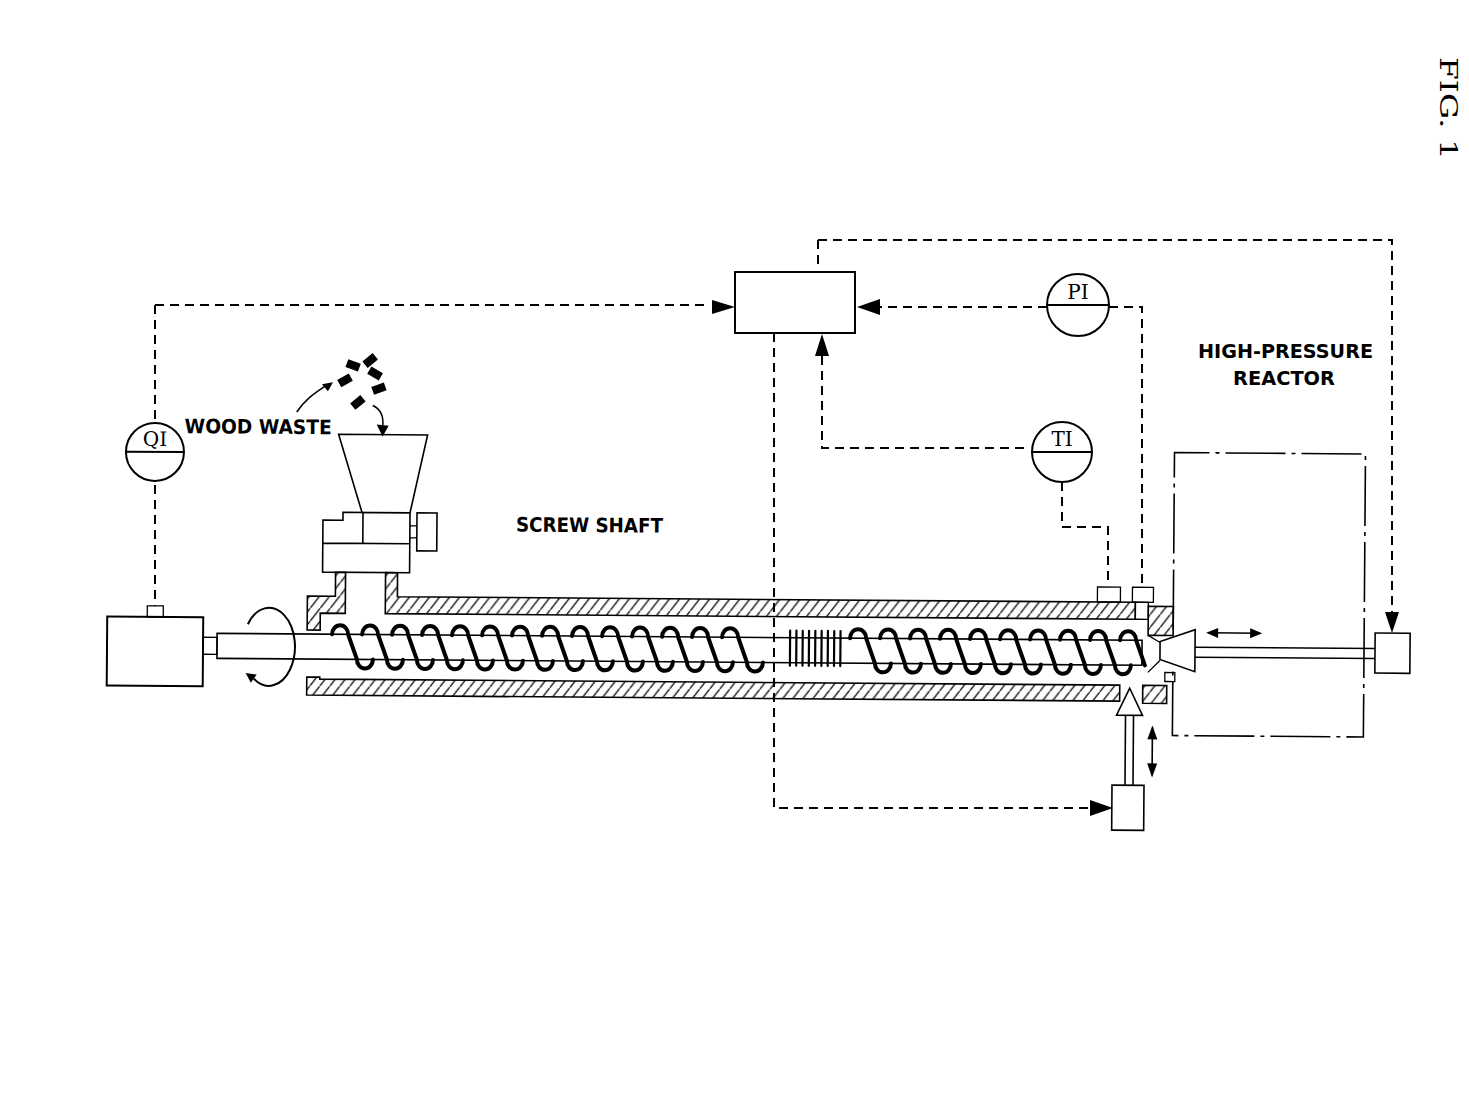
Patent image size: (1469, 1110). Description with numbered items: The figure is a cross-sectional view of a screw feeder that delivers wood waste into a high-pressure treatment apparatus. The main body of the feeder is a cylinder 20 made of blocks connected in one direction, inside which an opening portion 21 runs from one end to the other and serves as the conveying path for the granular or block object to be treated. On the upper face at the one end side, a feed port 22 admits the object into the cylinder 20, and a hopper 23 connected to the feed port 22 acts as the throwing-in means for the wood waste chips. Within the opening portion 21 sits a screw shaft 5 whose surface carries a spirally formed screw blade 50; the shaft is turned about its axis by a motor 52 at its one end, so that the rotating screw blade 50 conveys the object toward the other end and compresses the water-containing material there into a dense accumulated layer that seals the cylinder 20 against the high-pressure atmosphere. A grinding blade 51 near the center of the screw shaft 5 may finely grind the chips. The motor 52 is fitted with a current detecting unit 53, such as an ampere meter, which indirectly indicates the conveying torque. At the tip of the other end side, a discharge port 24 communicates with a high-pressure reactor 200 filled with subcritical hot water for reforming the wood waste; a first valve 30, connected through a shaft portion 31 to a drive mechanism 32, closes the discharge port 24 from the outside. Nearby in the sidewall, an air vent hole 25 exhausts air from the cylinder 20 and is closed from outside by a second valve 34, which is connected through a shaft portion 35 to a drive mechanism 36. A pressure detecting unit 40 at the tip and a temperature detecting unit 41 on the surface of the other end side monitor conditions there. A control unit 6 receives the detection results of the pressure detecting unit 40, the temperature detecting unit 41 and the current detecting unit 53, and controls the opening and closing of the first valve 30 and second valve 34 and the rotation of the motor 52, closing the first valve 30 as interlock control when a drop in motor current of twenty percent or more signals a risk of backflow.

The control unit 6 is at (781, 272).
The screw shaft 5 is at (595, 630).
The cylinder 20 is at (360, 699).
The opening portion 21 is at (935, 628).
The feed port 22 is at (368, 590).
The hopper 23 is at (428, 489).
The discharge port 24 is at (1163, 618).
The air vent hole 25 is at (1177, 676).
The first valve 30 is at (1197, 664).
The shaft portion 31 is at (1300, 654).
The drive mechanism 32 is at (1390, 668).
The second valve 34 is at (1116, 704).
The shaft portion 35 is at (1125, 746).
The drive mechanism 36 is at (1145, 806).
The pressure detecting unit 40 is at (1140, 583).
The temperature detecting unit 41 is at (1099, 585).
The screw blade 50 is at (745, 630).
The grinding blade 51 is at (820, 630).
The motor 52 is at (160, 692).
The current detecting unit 53 is at (161, 607).
The high-pressure reactor 200 is at (1258, 449).